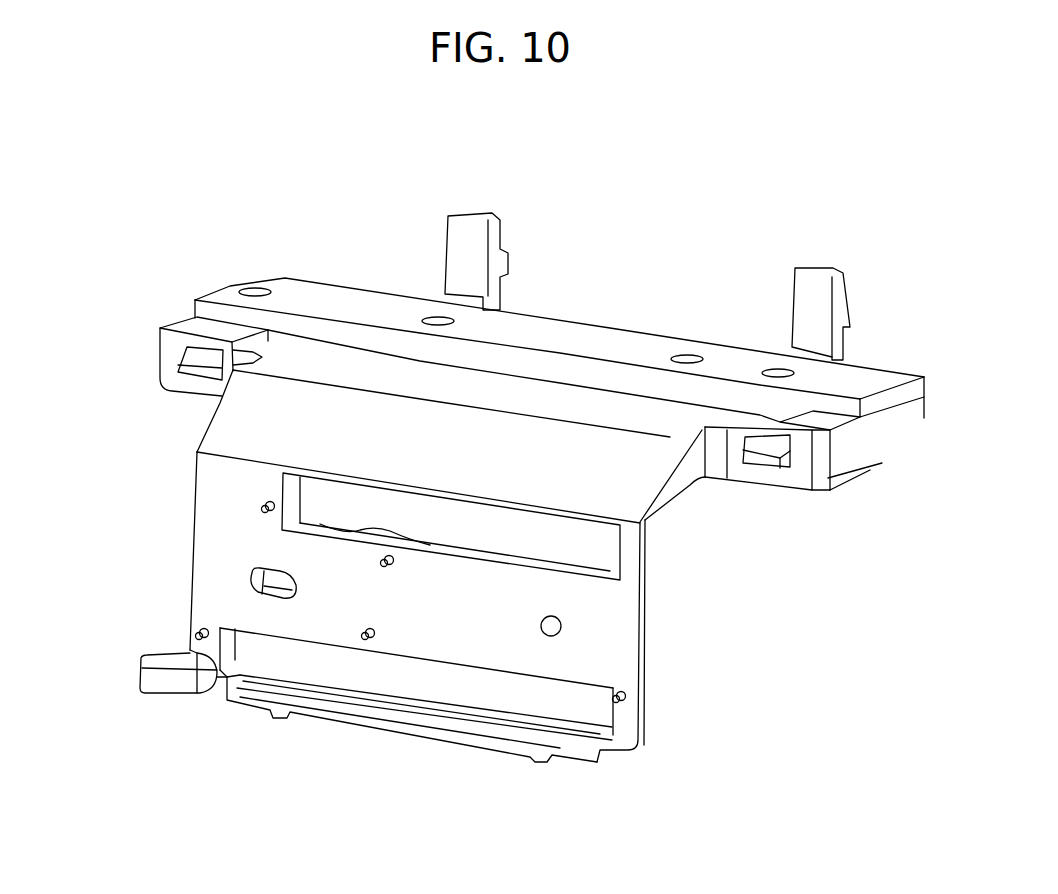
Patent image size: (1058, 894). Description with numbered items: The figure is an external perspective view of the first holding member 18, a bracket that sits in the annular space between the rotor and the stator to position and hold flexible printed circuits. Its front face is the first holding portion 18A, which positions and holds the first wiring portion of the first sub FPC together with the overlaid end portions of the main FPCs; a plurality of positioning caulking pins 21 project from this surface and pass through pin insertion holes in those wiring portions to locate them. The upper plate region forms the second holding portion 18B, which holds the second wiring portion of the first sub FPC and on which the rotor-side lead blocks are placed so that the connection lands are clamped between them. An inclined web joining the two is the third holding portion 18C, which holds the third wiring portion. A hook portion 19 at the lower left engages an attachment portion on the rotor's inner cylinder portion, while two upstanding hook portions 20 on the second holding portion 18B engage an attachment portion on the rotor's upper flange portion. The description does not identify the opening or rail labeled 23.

The first holding member 18 is at (826, 531).
The first holding portion 18A is at (617, 605).
The second holding portion 18B is at (756, 478).
The third holding portion 18C is at (630, 500).
The hook portion 19 is at (147, 683).
The hook portions 20 is at (485, 213).
The positioning caulking pins 21 is at (258, 513).
The opening / rail 23 is at (500, 522).